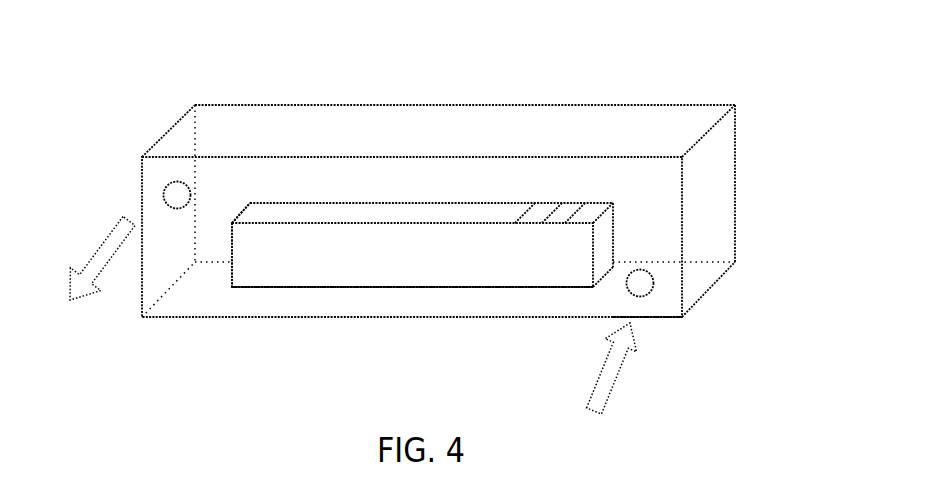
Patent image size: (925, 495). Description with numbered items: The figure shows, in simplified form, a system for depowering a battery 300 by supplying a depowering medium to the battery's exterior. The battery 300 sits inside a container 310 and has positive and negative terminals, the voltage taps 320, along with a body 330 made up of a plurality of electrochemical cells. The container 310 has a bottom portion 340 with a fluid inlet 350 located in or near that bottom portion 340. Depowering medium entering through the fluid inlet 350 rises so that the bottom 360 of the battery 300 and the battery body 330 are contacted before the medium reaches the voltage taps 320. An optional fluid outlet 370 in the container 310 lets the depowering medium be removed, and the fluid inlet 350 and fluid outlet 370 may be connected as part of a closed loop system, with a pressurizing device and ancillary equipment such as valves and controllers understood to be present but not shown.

The battery 300 is at (513, 255).
The container 310 is at (713, 172).
The voltage taps 320 is at (525, 197).
The battery body 330 is at (243, 255).
The bottom portion 340 is at (655, 315).
The fluid inlet 350 is at (653, 278).
The bottom of the battery 360 is at (432, 288).
The fluid outlet 370 is at (162, 195).